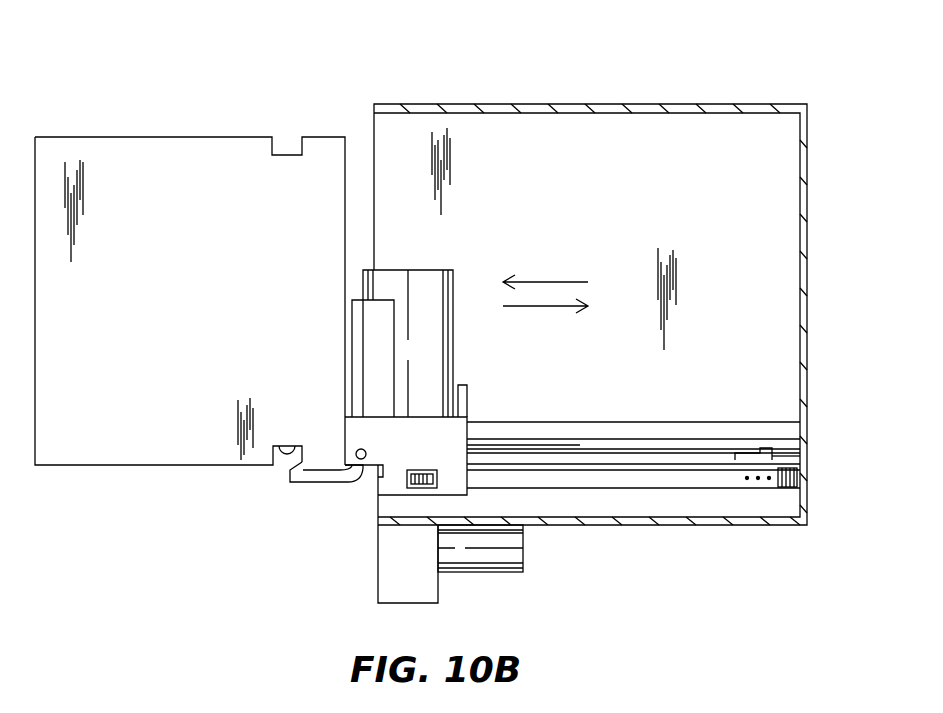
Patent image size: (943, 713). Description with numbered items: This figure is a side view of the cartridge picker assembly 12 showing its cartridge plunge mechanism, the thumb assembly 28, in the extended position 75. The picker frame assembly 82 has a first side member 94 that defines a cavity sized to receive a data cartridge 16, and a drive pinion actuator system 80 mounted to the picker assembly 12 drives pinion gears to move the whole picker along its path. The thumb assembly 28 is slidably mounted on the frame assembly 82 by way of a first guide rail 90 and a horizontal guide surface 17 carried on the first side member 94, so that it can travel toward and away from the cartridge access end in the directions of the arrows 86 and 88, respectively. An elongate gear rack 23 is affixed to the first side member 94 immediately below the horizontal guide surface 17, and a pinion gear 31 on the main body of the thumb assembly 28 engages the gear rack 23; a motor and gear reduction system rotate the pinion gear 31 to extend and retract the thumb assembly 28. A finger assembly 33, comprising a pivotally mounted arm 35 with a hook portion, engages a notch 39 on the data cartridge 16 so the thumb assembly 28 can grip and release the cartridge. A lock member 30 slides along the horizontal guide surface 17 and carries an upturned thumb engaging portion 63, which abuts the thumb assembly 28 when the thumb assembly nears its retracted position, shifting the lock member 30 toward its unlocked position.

The cartridge picker assembly 12 is at (354, 74).
The data cartridge 16 is at (184, 130).
The horizontal guide surface 17 is at (643, 464).
The gear rack 23 is at (788, 487).
The thumb assembly 28 is at (417, 262).
The lock member 30 is at (775, 456).
The pinion gear 31 is at (407, 480).
The finger assembly 33 is at (291, 492).
The arm 35 is at (290, 474).
The notch 39 is at (290, 446).
The upturned thumb engaging portion 63 is at (765, 448).
The extended position 75 is at (470, 398).
The drive pinion actuator system 80 is at (479, 588).
The picker frame assembly 82 is at (818, 155).
The arrow 86 is at (557, 282).
The arrow 88 is at (533, 306).
The first guide rail 90 is at (565, 445).
The first side member 94 is at (645, 113).